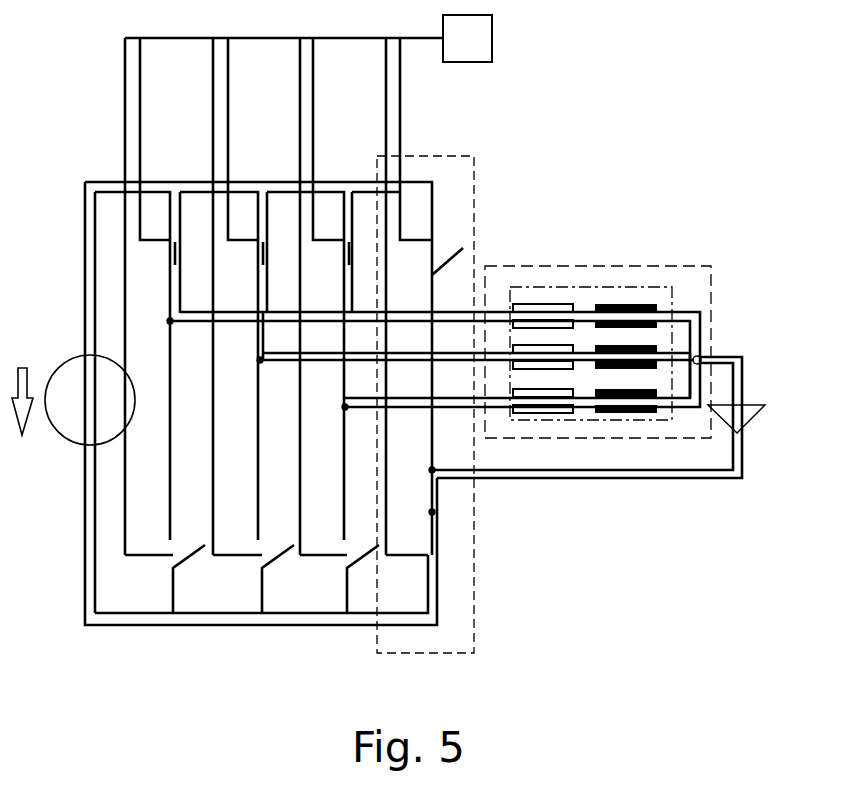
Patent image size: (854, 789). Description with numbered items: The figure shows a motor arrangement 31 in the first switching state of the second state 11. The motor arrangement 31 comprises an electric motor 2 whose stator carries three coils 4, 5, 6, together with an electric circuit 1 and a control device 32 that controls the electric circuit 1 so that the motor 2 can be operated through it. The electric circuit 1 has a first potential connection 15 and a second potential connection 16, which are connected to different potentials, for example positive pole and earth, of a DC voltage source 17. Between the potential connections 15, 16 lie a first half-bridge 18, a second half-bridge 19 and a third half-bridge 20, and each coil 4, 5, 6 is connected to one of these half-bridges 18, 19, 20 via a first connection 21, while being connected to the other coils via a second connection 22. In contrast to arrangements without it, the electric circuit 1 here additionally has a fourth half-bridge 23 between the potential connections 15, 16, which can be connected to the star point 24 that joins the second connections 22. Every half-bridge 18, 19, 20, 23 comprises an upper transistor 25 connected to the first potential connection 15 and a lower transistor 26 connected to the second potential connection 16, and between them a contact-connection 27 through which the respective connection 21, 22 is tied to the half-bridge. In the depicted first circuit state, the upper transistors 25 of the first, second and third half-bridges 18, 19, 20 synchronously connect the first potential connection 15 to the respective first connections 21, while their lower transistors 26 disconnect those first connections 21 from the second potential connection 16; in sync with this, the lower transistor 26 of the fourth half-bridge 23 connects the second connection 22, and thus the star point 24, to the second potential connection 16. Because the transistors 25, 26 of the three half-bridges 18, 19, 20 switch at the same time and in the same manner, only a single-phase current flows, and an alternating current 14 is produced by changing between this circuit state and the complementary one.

The electric circuit 1 is at (325, 141).
The electric motor 2 is at (620, 285).
The coil 4 is at (648, 303).
The coil 5 is at (677, 347).
The coil 6 is at (623, 420).
The second state 11 is at (558, 200).
The alternating current 14 is at (550, 482).
The first potential connection 15 is at (247, 184).
The second potential connection 16 is at (292, 628).
The DC voltage source 17 is at (70, 428).
The first half-bridge 18 is at (170, 640).
The second half-bridge 19 is at (257, 640).
The third half-bridge 20 is at (342, 640).
The first connection 21 is at (512, 308).
The second connection 22 is at (686, 316).
The fourth half-bridge 23 is at (476, 637).
The star point 24 is at (702, 358).
The upper transistor 25 is at (279, 257).
The lower transistor 26 is at (280, 561).
The contact-connection 27 is at (171, 324).
The motor arrangement 31 is at (494, 190).
The control device 32 is at (478, 37).